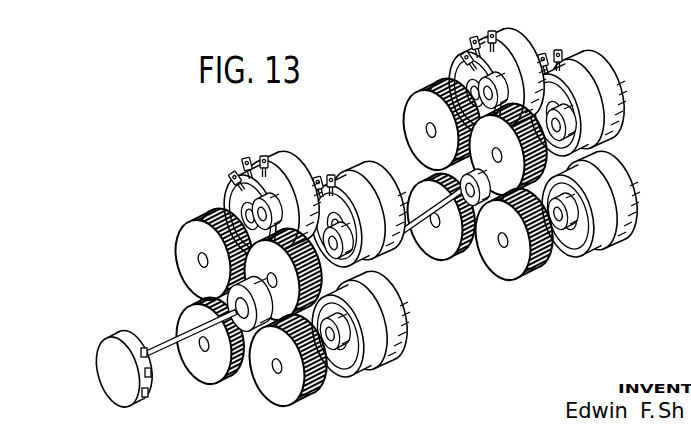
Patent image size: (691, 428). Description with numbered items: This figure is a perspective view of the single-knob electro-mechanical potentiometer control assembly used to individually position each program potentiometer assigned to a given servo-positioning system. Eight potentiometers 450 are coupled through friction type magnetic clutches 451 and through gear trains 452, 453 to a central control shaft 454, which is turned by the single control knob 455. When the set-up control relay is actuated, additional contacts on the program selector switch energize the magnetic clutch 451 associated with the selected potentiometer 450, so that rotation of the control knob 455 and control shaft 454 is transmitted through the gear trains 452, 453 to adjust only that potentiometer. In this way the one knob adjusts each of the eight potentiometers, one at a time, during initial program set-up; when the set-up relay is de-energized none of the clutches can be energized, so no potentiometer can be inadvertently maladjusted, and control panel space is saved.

The potentiometers 450 is at (370, 184).
The magnetic clutches 451 is at (192, 244).
The gear train 452 is at (208, 214).
The gear train 453 is at (257, 335).
The central control shaft 454 is at (172, 340).
The control knob 455 is at (112, 364).